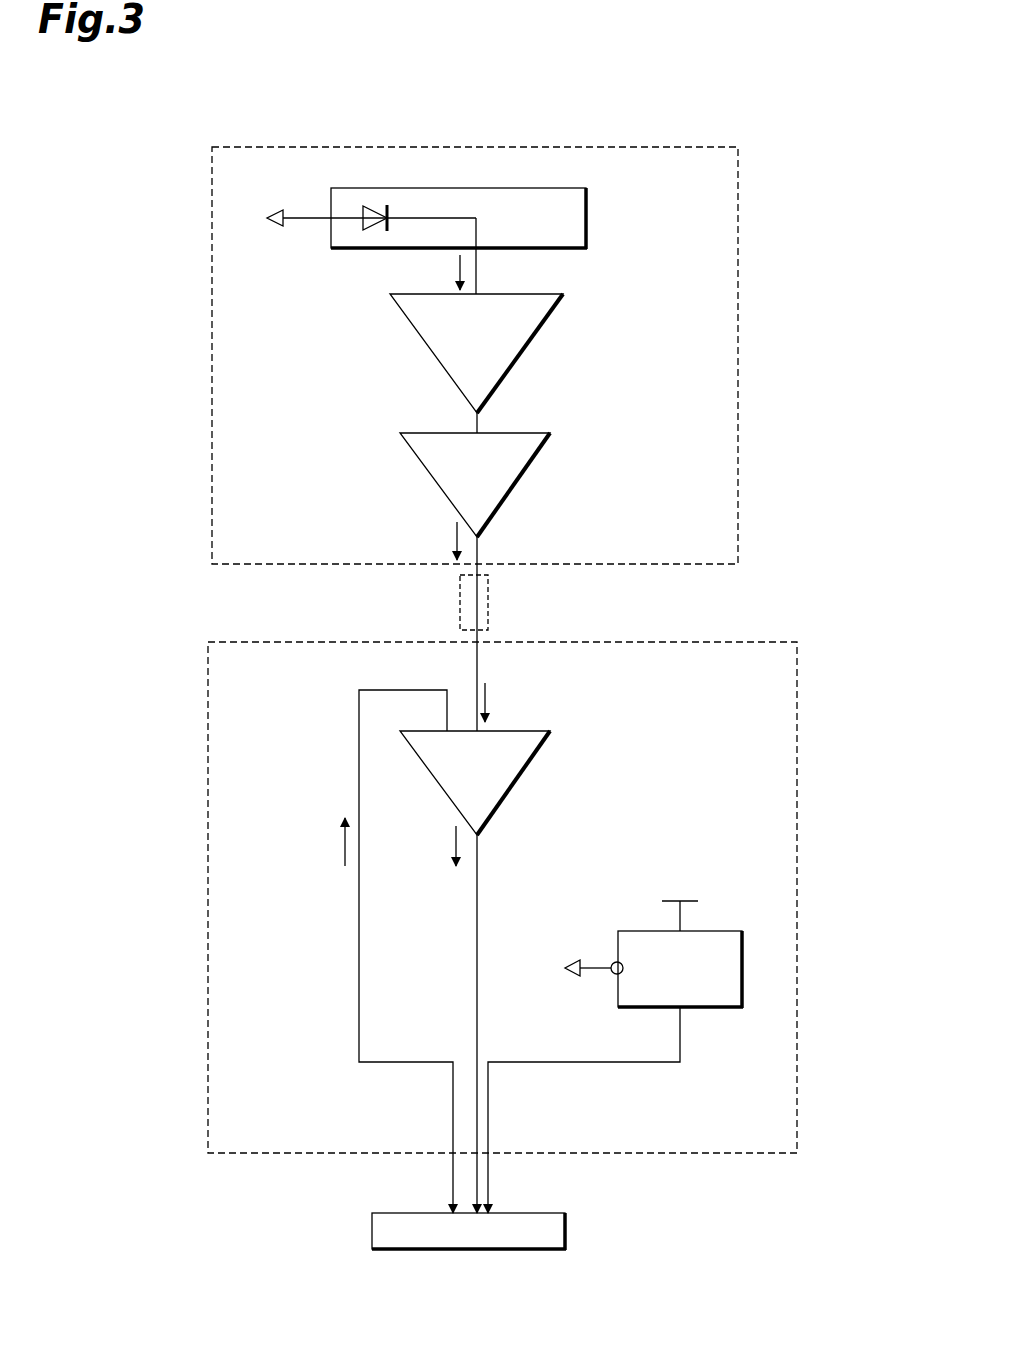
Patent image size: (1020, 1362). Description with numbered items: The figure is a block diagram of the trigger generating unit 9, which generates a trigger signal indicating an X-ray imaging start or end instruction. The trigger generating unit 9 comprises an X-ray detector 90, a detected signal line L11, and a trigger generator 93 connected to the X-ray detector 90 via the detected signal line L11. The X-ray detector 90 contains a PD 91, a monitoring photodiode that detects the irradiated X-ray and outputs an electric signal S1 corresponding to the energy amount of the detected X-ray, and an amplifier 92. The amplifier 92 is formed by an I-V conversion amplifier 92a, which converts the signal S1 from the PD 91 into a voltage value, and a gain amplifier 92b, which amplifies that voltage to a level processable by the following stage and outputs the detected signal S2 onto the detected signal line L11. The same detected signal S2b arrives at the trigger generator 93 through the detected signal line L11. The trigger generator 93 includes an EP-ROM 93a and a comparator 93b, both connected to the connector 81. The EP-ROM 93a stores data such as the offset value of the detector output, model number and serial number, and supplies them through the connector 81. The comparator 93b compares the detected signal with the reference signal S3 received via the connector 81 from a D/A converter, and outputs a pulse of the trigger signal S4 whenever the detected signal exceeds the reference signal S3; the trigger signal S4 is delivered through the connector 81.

The trigger generating unit 9 is at (680, 118).
The X-ray detector 90 is at (738, 233).
The PD 91 is at (588, 220).
The amplifier 92 is at (648, 320).
The I-V conversion amplifier 92a is at (518, 357).
The gain amplifier 92b is at (525, 470).
The trigger generator 93 is at (760, 642).
The EP-ROM 93a is at (738, 931).
The comparator 93b is at (520, 784).
The connector 81 is at (567, 1230).
The detected signal line L11 is at (488, 604).
The signal S1 is at (455, 266).
The signal S2 is at (453, 535).
The voltage signal (second occurrence) S2b is at (490, 702).
The reference signal S3 is at (343, 836).
The trigger signal S4 is at (452, 842).